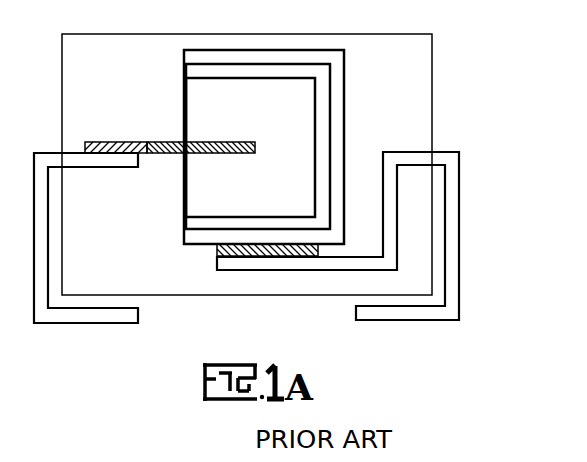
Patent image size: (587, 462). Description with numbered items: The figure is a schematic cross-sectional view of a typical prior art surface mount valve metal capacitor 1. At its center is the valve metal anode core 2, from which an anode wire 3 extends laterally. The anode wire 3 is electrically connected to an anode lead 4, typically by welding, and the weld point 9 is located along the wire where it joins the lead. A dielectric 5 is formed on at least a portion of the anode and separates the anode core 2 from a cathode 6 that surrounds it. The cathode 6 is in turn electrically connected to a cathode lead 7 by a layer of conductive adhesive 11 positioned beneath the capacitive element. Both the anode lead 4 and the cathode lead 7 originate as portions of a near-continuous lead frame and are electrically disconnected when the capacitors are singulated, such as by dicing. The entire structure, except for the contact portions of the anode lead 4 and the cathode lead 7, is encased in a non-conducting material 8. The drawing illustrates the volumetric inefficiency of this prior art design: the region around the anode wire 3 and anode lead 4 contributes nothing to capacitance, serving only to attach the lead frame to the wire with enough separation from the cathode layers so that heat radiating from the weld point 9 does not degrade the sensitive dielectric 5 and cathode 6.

The surface mount valve metal capacitor 1 is at (462, 90).
The valve metal anode core 2 is at (288, 115).
The anode wire 3 is at (153, 142).
The anode lead 4 is at (70, 315).
The dielectric 5 is at (274, 73).
The cathode 6 is at (296, 55).
The cathode lead 7 is at (453, 217).
The non-conducting material 8 is at (138, 47).
The weld point 9 is at (102, 140).
The conductive adhesive 11 is at (265, 254).